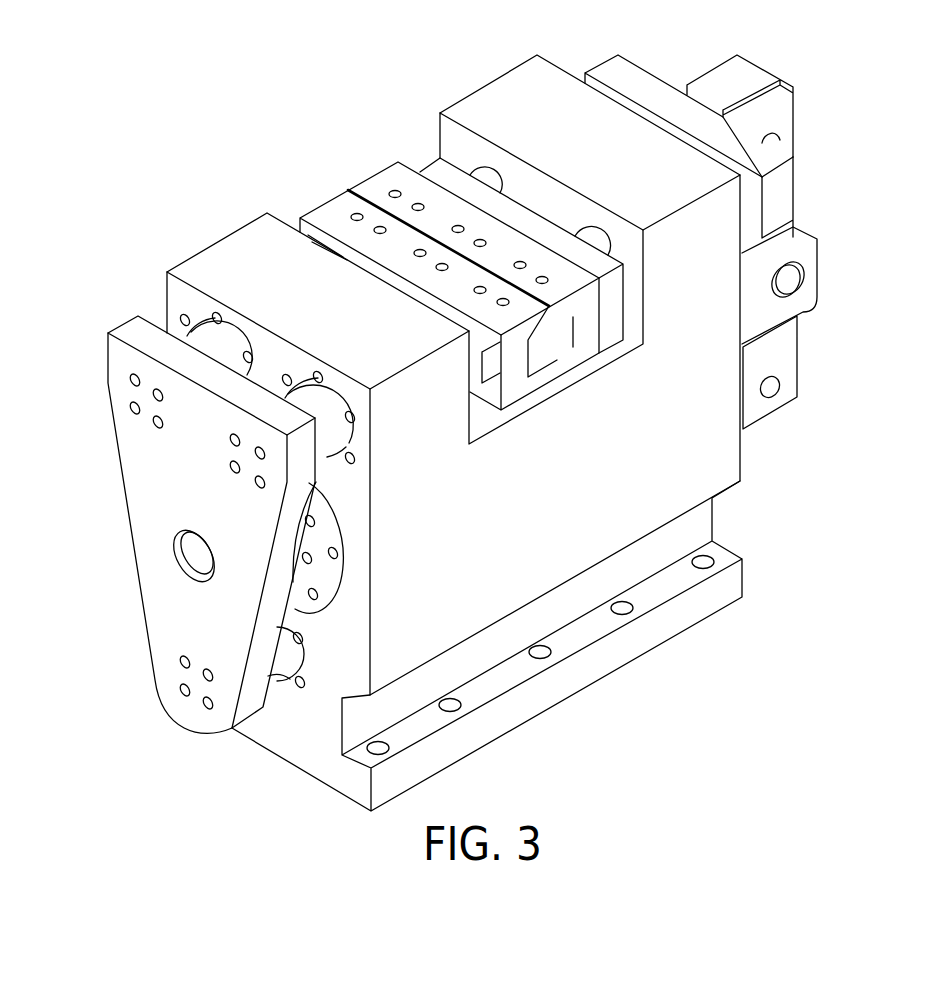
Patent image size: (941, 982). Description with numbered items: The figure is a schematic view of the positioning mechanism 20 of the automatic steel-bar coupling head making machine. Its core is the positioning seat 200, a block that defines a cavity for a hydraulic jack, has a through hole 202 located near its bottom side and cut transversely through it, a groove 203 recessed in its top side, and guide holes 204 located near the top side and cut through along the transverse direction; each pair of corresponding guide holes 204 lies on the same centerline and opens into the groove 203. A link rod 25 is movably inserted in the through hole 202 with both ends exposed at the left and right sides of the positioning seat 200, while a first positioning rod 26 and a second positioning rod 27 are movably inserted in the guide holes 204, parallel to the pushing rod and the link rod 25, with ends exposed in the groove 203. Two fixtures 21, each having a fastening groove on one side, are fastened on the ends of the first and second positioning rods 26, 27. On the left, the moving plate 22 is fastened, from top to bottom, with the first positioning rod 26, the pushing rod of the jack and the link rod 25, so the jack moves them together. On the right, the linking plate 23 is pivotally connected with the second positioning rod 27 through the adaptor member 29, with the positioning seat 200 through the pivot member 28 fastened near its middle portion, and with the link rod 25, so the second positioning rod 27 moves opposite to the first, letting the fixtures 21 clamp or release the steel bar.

The positioning mechanism 20 is at (785, 548).
The positioning seat 200 is at (732, 465).
The through hole 202 is at (273, 680).
The groove 203 is at (447, 132).
The guide holes 204 is at (307, 388).
The fixtures 21 is at (380, 180).
The moving plate 22 is at (147, 566).
The linking plate 23 is at (790, 110).
The link rod 25 is at (287, 660).
The first positioning rod 26 is at (310, 403).
The second positioning rod 27 is at (722, 140).
The pivot member 28 is at (818, 273).
The adaptor member 29 is at (790, 200).